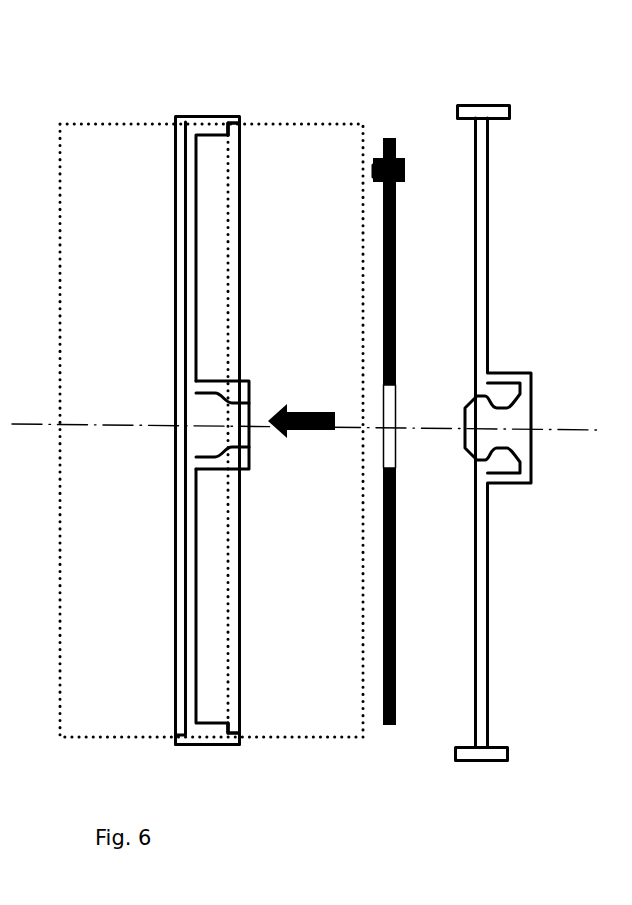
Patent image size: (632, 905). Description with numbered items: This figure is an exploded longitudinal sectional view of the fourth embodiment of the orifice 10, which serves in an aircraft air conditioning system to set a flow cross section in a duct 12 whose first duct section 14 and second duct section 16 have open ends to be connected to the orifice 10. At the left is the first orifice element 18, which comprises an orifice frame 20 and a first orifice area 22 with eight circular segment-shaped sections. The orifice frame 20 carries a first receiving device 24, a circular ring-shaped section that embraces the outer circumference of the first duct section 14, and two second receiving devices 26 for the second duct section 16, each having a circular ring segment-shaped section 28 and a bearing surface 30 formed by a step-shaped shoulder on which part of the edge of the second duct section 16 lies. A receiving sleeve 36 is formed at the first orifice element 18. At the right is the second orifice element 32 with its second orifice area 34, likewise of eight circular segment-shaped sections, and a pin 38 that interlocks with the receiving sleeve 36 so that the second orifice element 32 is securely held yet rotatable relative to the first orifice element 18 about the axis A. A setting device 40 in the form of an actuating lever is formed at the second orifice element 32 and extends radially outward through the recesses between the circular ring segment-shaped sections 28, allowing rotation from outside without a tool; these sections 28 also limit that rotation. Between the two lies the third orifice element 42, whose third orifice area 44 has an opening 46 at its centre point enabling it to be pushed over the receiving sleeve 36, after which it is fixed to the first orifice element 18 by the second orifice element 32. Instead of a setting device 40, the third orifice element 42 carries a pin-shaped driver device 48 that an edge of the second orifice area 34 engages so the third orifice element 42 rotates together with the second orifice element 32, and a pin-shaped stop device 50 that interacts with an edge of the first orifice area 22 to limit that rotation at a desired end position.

The orifice 10 is at (580, 160).
The duct 12 is at (63, 118).
The first duct section 14 is at (128, 122).
The second duct section 16 is at (297, 124).
The first orifice element 18 is at (224, 772).
The orifice frame 20 is at (198, 746).
The first orifice area 22 is at (184, 284).
The first receiving device 24 is at (186, 114).
The second receiving device 26 is at (246, 158).
The circular ring segment-shaped section 28 is at (236, 116).
The bearing surface 30 is at (252, 149).
The second orifice element 32 is at (488, 782).
The second orifice area 34 is at (497, 268).
The receiving sleeve 36 is at (243, 382).
The pin 38 is at (465, 420).
The setting device 40 is at (482, 104).
The third orifice element 42 is at (380, 387).
The third orifice area 44 is at (396, 545).
The opening 46 is at (382, 392).
The driver device 48 is at (405, 172).
The stop device 50 is at (372, 168).
The axis A is at (581, 429).